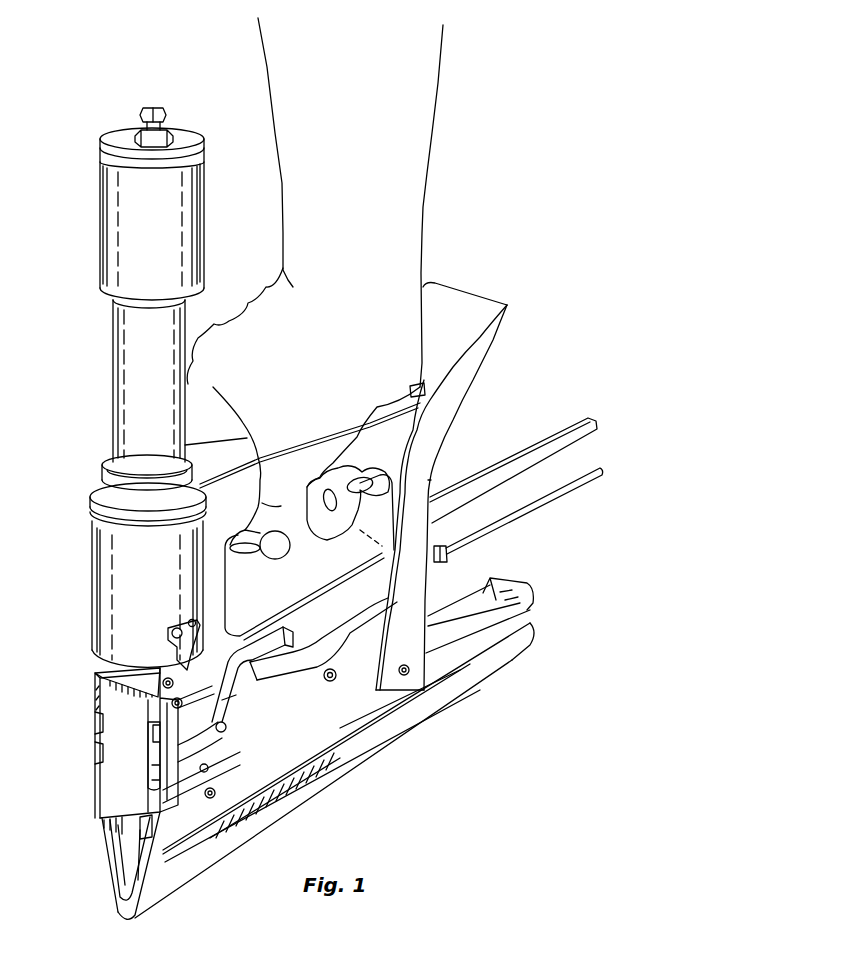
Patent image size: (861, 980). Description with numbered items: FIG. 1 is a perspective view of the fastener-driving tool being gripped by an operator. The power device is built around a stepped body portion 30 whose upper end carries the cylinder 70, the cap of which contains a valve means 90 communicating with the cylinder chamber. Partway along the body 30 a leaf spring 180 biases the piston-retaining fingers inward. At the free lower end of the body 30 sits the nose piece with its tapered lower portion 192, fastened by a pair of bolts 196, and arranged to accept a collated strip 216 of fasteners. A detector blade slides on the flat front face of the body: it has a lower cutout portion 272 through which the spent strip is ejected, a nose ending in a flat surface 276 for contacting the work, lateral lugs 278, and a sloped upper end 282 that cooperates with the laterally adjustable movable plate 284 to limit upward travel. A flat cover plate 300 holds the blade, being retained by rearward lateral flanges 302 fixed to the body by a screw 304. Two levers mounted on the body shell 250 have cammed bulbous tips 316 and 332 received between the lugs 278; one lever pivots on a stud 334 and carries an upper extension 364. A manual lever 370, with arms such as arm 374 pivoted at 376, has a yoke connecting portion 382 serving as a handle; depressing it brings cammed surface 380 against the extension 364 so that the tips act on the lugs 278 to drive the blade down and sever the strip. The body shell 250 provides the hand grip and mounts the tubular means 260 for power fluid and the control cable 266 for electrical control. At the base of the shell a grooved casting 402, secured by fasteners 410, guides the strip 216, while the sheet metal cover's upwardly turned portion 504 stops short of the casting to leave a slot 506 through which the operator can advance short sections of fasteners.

The valve means 90 is at (156, 108).
The cylinder 70 is at (138, 403).
The stepped body portion 30 is at (125, 557).
The leaf spring 180 is at (190, 616).
The movable plate 284 is at (143, 670).
The upper end of detector blade 282 is at (123, 686).
The cammed bulbous tip 316 is at (95, 730).
The bulbous tip 332 is at (147, 753).
The flat cover plate 300 is at (121, 792).
The lower cutout portion 272 is at (117, 883).
The flat surface 276 is at (124, 920).
The tapered lower portion 192 is at (170, 873).
The collated strip 216 is at (330, 763).
The upwardly turned portion 504 is at (407, 717).
The slot 506 is at (455, 668).
The grooved casting 402 is at (493, 600).
The body shell 250 is at (348, 624).
The yoke connecting portion 382 is at (457, 308).
The manual lever 370 is at (414, 488).
The arm 374 is at (388, 628).
The tubular means 260 is at (535, 450).
The control cable 266 is at (565, 497).
The upper extension 364 is at (263, 640).
The cammed surface 380 is at (280, 657).
The lugs 278 is at (236, 700).
The stud 334 is at (226, 727).
The lateral flanges 302 is at (200, 741).
The screw 304 is at (182, 702).
The bolts 196 is at (210, 793).
The pivot 376 is at (323, 677).
The fasteners 410 is at (397, 672).